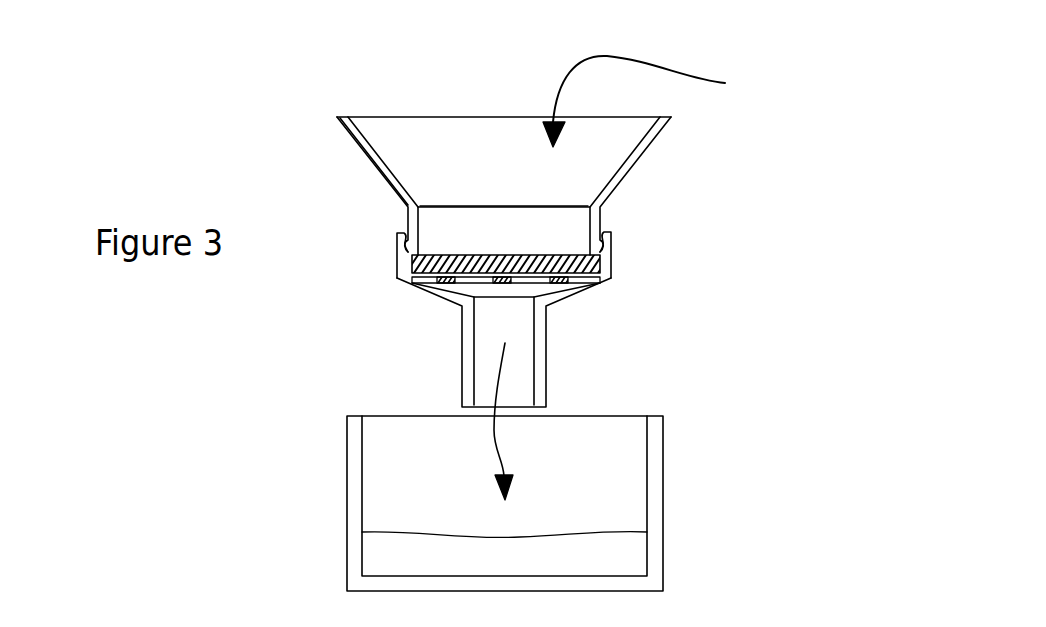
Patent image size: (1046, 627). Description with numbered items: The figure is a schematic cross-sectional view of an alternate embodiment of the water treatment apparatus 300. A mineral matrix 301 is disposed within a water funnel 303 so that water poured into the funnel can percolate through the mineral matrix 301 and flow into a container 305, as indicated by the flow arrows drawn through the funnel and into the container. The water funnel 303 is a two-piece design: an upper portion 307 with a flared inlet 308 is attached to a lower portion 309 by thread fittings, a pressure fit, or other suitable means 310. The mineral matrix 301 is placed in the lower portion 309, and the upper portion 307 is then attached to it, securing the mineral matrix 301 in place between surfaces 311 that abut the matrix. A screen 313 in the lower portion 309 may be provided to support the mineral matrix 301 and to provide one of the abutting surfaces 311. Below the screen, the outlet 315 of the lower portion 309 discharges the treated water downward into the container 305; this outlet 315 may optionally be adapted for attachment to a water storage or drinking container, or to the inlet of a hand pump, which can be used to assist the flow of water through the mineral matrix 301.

The filtration assembly 300 is at (695, 215).
The mineral matrix 301 is at (571, 266).
The water funnel 303 is at (635, 161).
The container 305 is at (655, 531).
The upper portion 307 is at (397, 192).
The flared inlet 308 is at (468, 168).
The lower portion 309 is at (525, 368).
The attachment means 310 is at (603, 246).
The abutting surfaces 311 is at (447, 285).
The screen 313 is at (472, 298).
The outlet 315 is at (467, 384).